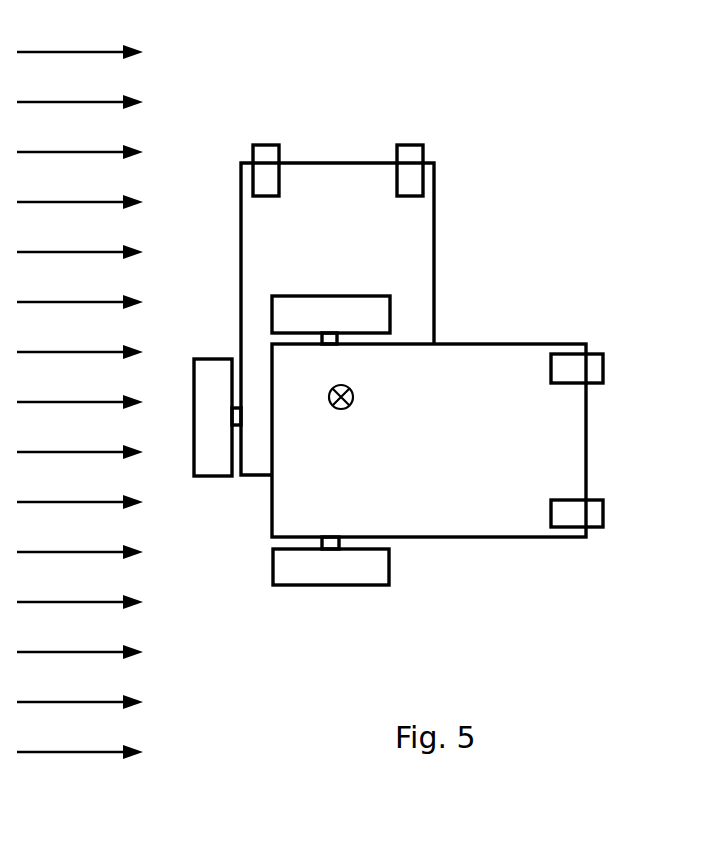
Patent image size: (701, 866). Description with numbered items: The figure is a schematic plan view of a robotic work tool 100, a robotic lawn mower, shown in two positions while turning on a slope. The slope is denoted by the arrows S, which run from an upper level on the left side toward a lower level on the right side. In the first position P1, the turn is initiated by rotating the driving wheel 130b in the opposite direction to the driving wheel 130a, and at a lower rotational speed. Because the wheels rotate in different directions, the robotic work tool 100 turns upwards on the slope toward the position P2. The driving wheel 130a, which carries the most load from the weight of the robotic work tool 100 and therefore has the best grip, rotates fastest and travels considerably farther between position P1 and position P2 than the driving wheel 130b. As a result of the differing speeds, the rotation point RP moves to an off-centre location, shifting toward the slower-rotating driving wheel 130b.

The robotic work tool 100 is at (437, 296).
The driving wheel 130a is at (360, 585).
The driving wheel 130b is at (272, 318).
The rotation point RP is at (354, 392).
The first position P1 is at (436, 177).
The position P2 is at (543, 344).
The arrows S is at (80, 390).